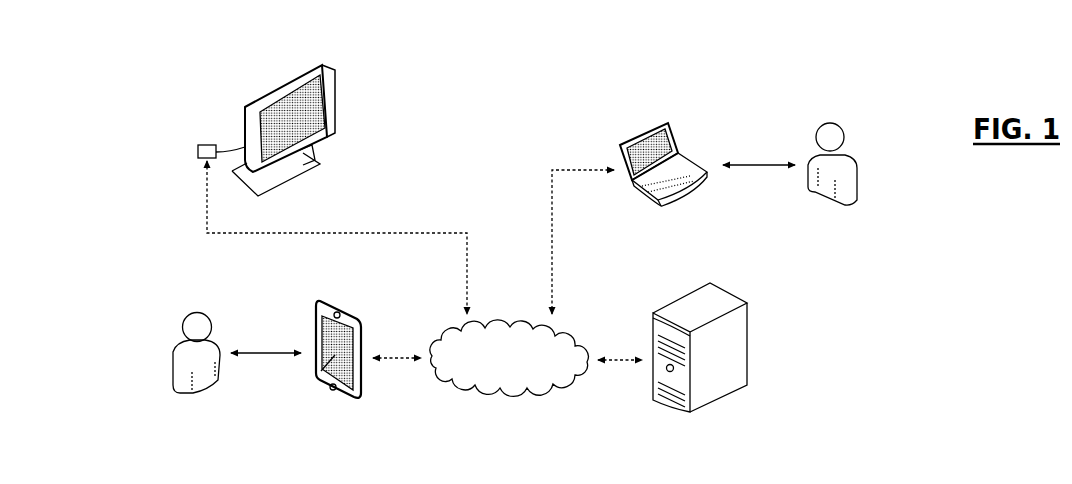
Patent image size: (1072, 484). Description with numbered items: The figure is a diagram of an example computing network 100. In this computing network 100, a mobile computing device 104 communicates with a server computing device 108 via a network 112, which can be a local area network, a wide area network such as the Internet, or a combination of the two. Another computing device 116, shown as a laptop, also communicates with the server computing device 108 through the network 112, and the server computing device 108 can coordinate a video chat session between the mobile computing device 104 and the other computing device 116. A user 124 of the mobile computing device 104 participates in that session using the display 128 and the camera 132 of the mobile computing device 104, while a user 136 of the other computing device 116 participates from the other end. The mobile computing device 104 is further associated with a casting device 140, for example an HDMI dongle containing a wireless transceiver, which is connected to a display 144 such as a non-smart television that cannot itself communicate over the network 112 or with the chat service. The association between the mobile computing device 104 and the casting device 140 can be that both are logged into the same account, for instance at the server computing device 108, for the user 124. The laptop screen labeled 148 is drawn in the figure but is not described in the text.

The computing network 100 is at (917, 366).
The mobile computing device 104 is at (315, 359).
The server computing device 108 is at (748, 347).
The network 112 is at (507, 388).
The other computing device 116 is at (663, 166).
The user 124 is at (200, 312).
The display 128 is at (322, 386).
The camera 132 is at (321, 302).
The user 136 is at (848, 207).
The casting device 140 is at (198, 146).
The display 144 is at (274, 85).
The laptop display 148 is at (658, 135).